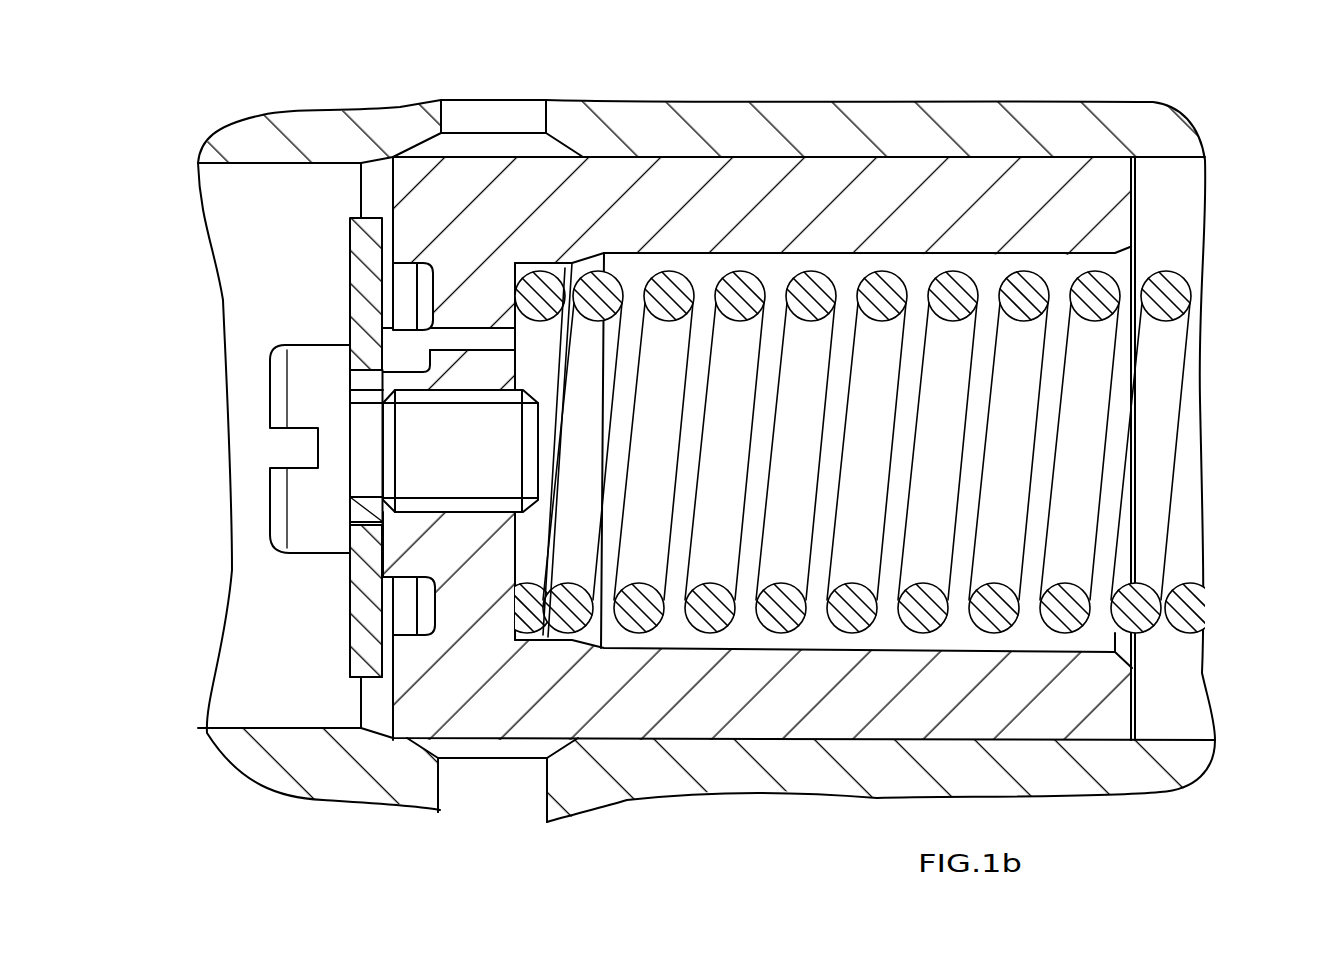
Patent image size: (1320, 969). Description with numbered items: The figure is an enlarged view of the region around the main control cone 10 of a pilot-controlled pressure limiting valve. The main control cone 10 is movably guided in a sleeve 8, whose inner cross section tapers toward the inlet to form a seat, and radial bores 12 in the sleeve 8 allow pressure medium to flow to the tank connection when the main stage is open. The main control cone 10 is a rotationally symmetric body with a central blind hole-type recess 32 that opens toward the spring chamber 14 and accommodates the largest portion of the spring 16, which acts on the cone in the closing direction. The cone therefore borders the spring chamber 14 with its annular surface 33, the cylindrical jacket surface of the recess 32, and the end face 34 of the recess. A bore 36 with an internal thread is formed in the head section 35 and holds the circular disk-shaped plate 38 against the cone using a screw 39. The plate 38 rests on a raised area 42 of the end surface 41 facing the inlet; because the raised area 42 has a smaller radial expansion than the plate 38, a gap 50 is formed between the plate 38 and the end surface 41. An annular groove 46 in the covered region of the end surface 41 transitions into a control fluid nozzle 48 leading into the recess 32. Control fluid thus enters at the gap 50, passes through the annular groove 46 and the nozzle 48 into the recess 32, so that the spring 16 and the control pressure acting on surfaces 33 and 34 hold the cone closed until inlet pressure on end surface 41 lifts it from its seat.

The sleeve 8 is at (969, 138).
The main control cone 10 is at (823, 448).
The radial bores 12 is at (483, 778).
The spring chamber 14 is at (1153, 212).
The spring 16 is at (1170, 290).
The blind hole-type recess 32 is at (881, 332).
The annular surface 33 is at (1133, 697).
The end face of recess 34 is at (546, 534).
The head section 35 is at (432, 697).
The bore 36 is at (457, 514).
The plate 38 is at (348, 273).
The screw 39 is at (317, 382).
The end surface 41 is at (390, 193).
The raised area 42 is at (377, 562).
The annular groove 46 is at (403, 303).
The control fluid nozzle 48 is at (483, 328).
The gap 50 is at (387, 667).